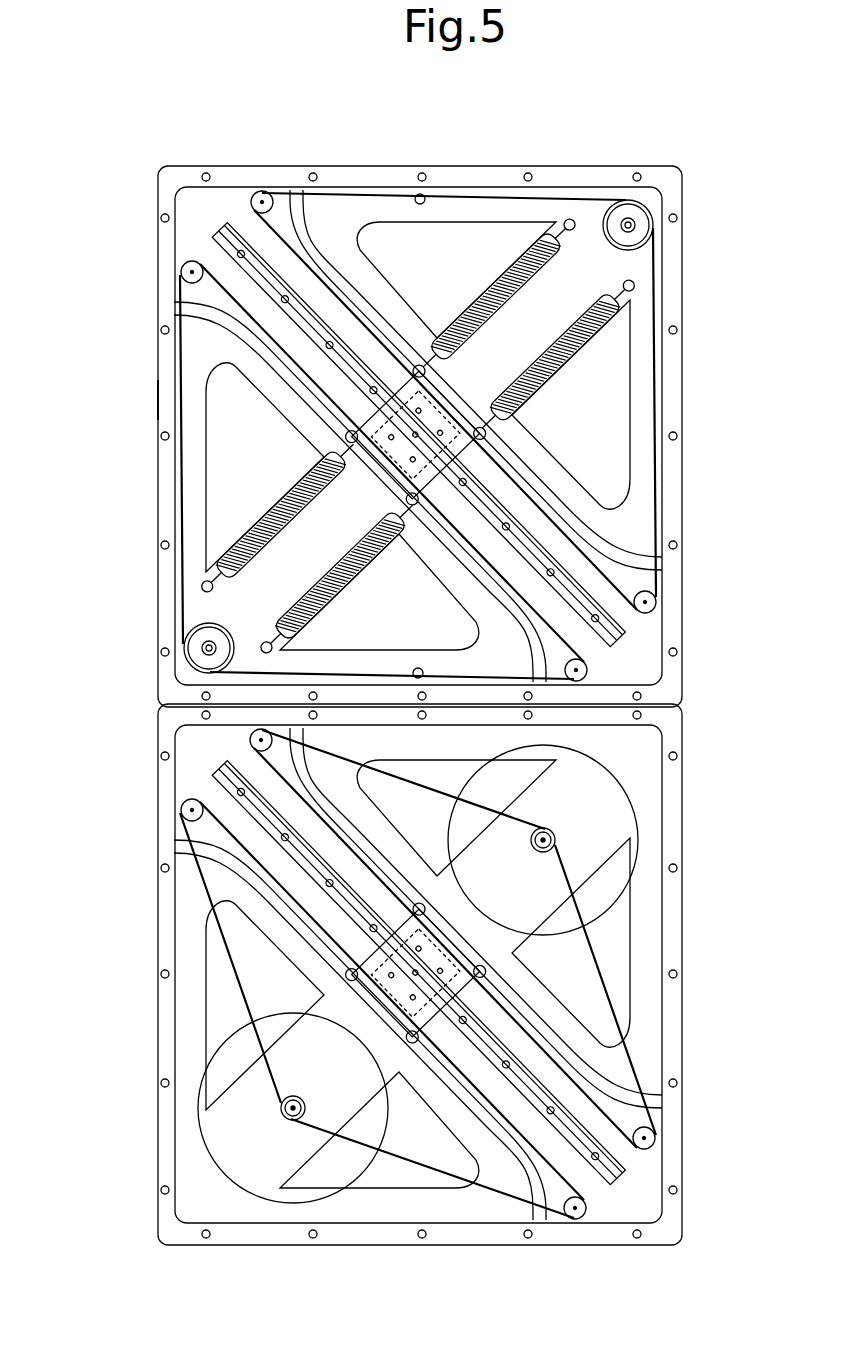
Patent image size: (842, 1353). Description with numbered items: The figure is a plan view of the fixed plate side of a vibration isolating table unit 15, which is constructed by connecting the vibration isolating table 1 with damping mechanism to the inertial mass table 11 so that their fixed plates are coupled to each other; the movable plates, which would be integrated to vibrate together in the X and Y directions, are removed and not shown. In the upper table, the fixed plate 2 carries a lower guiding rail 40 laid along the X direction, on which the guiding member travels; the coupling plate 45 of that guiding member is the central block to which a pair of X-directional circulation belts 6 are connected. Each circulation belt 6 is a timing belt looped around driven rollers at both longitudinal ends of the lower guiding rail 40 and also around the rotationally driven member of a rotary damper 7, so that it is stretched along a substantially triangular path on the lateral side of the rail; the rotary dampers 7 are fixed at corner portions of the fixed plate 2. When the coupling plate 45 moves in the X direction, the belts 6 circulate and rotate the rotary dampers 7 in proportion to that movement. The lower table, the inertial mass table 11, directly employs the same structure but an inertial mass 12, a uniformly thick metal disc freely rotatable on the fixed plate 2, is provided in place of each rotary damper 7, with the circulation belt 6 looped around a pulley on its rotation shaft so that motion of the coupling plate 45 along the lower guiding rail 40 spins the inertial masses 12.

The vibration isolating table with damping mechanism 1 is at (135, 392).
The fixed plate 2 is at (190, 240).
The X-directional circulation belt 6 is at (485, 194).
The rotary damper 7 is at (605, 200).
The inertial mass table 11 is at (125, 908).
The inertial mass 12 is at (640, 842).
The vibration isolating table unit 15 is at (297, 152).
The lower guiding rail 40 is at (310, 330).
The coupling plate 45 is at (417, 905).